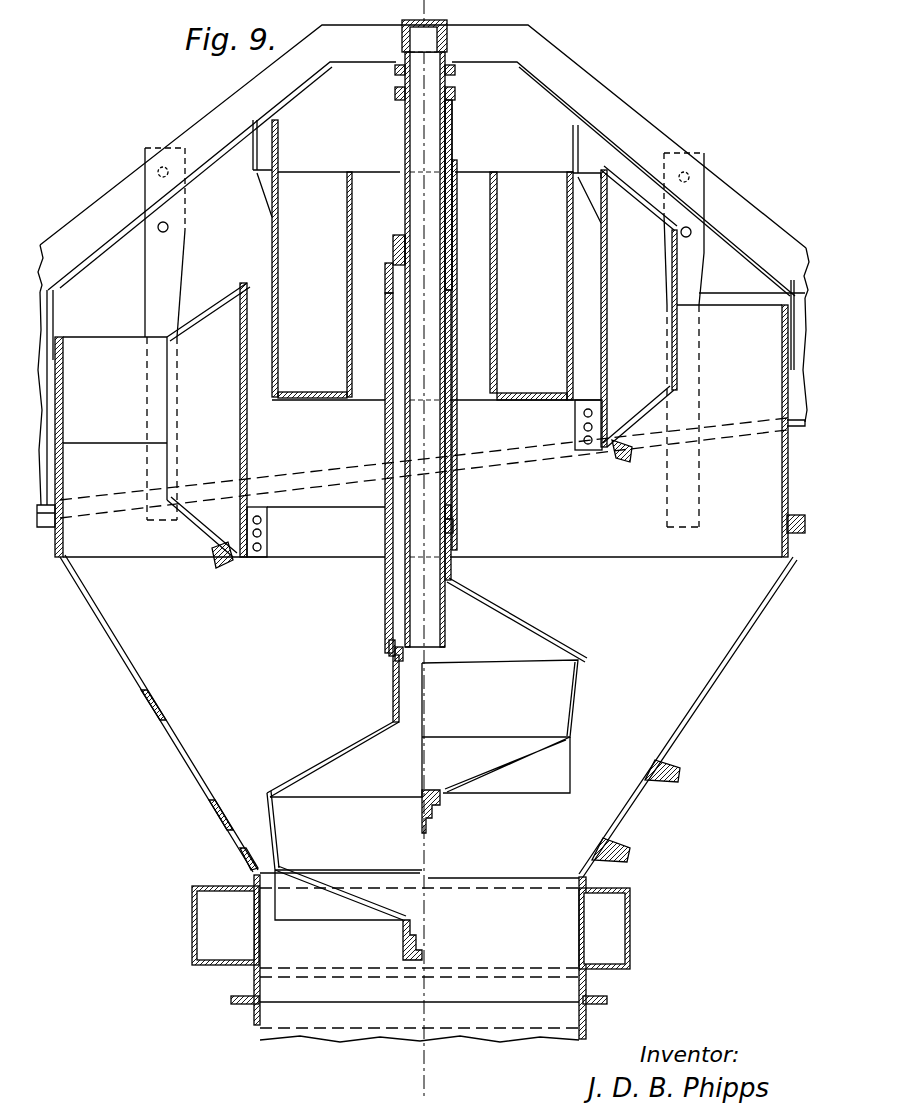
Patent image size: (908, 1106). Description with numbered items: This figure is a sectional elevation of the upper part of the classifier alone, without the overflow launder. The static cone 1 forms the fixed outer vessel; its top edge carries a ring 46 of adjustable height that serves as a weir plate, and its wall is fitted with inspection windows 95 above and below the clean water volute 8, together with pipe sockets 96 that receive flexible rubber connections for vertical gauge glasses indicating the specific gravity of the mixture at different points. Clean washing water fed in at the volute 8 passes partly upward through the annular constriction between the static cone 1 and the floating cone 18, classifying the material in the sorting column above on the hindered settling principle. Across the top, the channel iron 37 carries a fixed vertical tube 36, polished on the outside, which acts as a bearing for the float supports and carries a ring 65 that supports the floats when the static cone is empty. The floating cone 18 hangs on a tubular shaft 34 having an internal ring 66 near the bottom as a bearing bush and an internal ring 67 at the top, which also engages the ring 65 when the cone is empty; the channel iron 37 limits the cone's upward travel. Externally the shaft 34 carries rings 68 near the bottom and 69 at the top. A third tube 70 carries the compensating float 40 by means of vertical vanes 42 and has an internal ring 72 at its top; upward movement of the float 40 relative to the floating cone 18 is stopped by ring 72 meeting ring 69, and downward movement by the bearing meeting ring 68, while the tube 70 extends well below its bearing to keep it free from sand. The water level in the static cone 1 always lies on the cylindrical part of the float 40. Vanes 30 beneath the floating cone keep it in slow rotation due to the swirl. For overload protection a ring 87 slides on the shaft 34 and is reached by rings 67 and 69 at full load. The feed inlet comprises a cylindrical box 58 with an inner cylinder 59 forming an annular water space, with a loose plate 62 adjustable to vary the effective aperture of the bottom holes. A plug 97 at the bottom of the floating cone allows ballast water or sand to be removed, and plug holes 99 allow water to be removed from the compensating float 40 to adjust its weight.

The static cone 1 is at (745, 643).
The clean water volute 8 is at (631, 942).
The floating cone 18 is at (577, 703).
The vanes 30 is at (572, 771).
The tubular shaft 34 is at (392, 685).
The fixed vertical tube 36 is at (403, 128).
The channel iron 37 is at (540, 47).
The compensating float 40 is at (247, 447).
The vertical vanes 42 is at (315, 555).
The ring 46 is at (62, 382).
The cylindrical box 58 is at (282, 306).
The inner cylinder 59 is at (497, 316).
The loose plate 62 is at (306, 392).
The ring 65 is at (396, 282).
The internal ring 66 is at (452, 532).
The internal ring 67 is at (442, 140).
The external ring 68 is at (454, 515).
The external ring 69 is at (456, 130).
The third tube 70 is at (452, 484).
The internal ring 72 is at (458, 162).
The ring 87 is at (456, 97).
The inspection windows 95 is at (196, 790).
The pipe sockets 96 is at (787, 524).
The plug 97 is at (424, 958).
The plug holes 99 is at (220, 568).